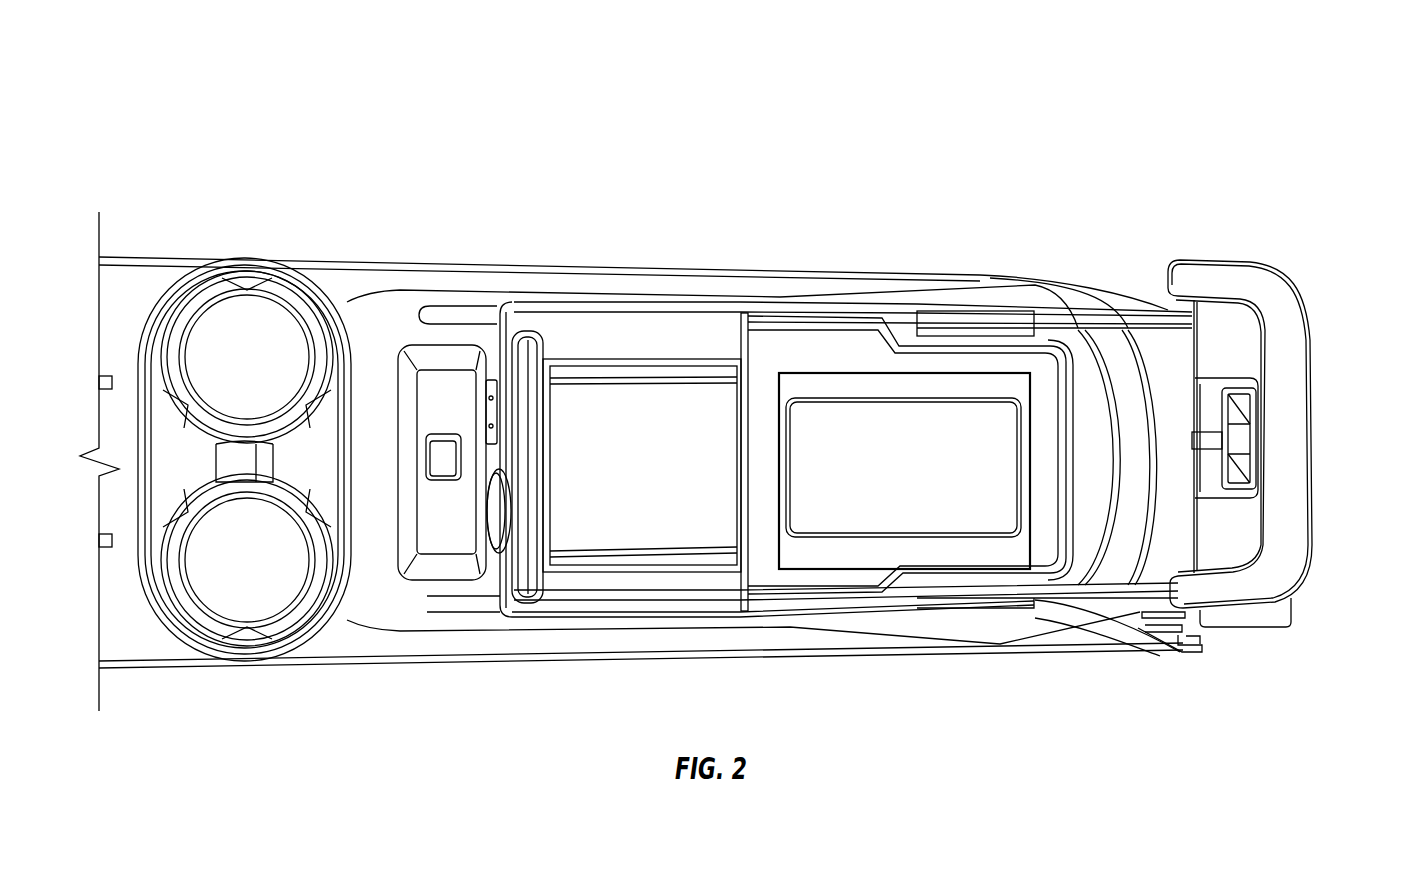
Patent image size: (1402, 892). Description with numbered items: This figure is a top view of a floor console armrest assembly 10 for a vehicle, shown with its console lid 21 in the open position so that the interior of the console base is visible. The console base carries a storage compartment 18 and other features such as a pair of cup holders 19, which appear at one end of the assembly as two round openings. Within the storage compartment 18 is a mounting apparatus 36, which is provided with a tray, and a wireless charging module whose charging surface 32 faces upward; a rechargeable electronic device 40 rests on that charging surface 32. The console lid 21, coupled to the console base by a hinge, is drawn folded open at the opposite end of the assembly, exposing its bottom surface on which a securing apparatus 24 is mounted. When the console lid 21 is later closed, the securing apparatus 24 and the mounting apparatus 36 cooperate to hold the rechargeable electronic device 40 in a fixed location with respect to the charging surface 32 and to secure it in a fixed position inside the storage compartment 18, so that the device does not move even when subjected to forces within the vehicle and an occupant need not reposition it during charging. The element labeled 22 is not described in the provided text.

The floor console armrest assembly 10 is at (146, 122).
The storage compartment 18 is at (664, 396).
The cup holders 19 is at (267, 315).
The console lid 21 is at (1289, 485).
The latch 22 is at (1239, 439).
The securing apparatus 24 is at (1197, 474).
The charging surface 32 is at (821, 559).
The mounting apparatus 36 is at (779, 337).
The rechargeable electronic device 40 is at (917, 477).